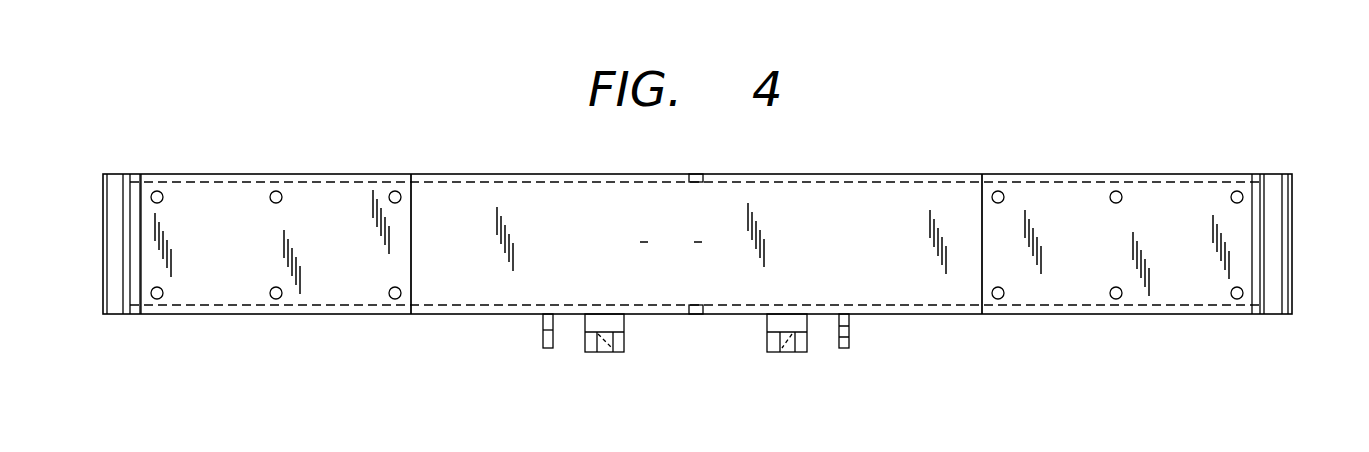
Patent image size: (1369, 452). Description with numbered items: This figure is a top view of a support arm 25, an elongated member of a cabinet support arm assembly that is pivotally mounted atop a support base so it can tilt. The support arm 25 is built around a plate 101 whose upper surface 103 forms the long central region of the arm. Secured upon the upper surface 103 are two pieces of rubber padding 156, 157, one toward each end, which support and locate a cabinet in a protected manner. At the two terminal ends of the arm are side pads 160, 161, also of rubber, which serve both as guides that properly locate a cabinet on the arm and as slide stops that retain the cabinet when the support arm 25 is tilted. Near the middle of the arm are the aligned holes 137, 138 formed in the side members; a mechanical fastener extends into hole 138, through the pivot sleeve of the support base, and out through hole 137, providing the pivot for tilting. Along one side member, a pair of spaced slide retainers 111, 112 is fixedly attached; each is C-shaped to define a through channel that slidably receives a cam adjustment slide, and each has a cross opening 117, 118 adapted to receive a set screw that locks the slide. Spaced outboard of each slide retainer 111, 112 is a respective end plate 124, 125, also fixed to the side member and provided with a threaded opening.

The support arm 25 is at (884, 122).
The plate 101 is at (462, 174).
The upper surface 103 is at (696, 244).
The padding 156 is at (208, 193).
The padding 157 is at (1078, 195).
The side pad 160 is at (118, 172).
The side pad 161 is at (1278, 175).
The hole 138 is at (698, 174).
The hole 137 is at (697, 314).
The end plate 124 is at (543, 340).
The end plate 125 is at (849, 340).
The slide retainer 111 is at (586, 352).
The slide retainer 112 is at (800, 352).
The cross opening 117 is at (610, 352).
The cross opening 118 is at (780, 352).